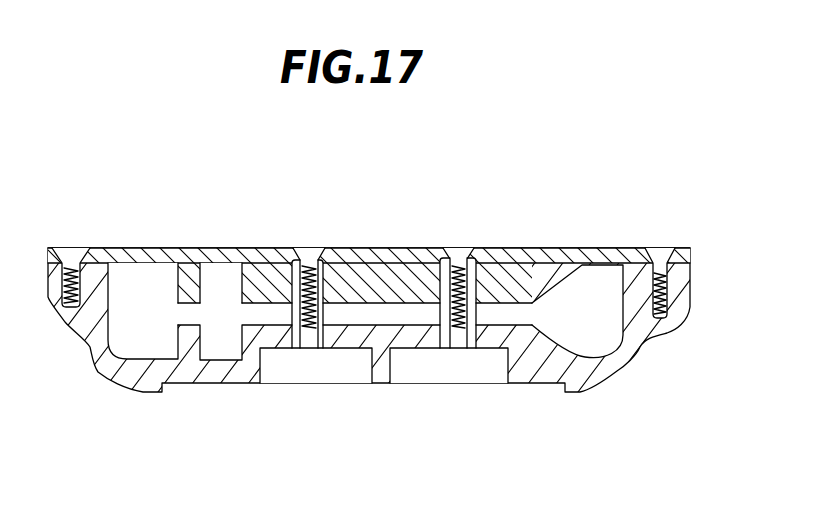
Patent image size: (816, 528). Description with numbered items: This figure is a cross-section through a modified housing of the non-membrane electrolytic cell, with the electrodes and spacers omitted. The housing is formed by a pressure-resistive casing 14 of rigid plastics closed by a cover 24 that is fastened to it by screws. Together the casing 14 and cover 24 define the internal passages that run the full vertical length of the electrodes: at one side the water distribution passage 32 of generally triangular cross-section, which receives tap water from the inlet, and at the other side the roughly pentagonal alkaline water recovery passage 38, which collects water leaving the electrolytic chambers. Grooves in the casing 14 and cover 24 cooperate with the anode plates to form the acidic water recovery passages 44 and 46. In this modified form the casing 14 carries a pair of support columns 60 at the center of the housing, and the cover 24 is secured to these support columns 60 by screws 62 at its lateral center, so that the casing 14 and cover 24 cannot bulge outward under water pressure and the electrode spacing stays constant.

The casing 14 is at (235, 376).
The cover 24 is at (540, 263).
The water distribution passage 32 is at (601, 315).
The alkaline water recovery passage 38 is at (148, 327).
The acidic water recovery passage 44 is at (221, 348).
The acidic water recovery passage 46 is at (227, 280).
The support columns 60 is at (443, 285).
The screws 62 is at (310, 247).